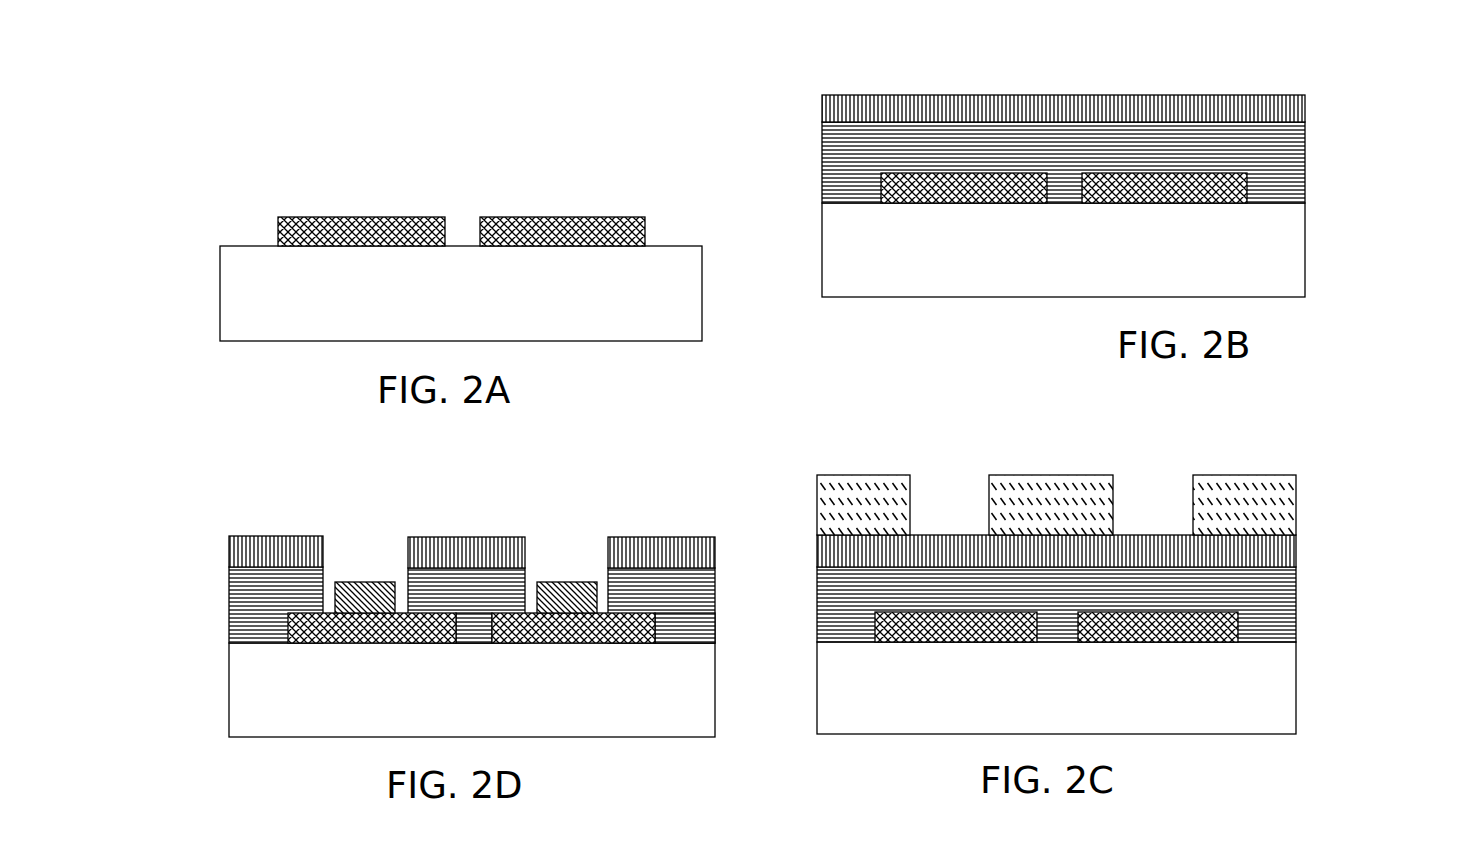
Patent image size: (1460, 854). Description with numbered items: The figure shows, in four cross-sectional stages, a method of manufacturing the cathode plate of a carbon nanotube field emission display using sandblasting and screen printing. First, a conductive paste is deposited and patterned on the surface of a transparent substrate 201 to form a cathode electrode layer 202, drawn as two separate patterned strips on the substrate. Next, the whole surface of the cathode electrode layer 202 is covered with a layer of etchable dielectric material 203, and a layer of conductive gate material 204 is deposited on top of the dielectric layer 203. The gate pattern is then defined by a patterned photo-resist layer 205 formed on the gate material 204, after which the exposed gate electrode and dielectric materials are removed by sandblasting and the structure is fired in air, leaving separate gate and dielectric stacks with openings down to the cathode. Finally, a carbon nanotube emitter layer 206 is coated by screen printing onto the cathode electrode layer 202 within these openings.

In FIG. 2A, the transparent substrate 201 is at (233, 295).
In FIG. 2B, the transparent substrate 201 is at (843, 233).
In FIG. 2C, the transparent substrate 201 is at (1272, 698).
In FIG. 2D, the transparent substrate 201 is at (240, 698).
In FIG. 2A, the cathode electrode layer 202 is at (280, 232).
In FIG. 2B, the cathode electrode layer 202 is at (823, 163).
In FIG. 2C, the cathode electrode layer 202 is at (868, 612).
In FIG. 2D, the cathode electrode layer 202 is at (243, 617).
In FIG. 2B, the etchable dielectric material layer 203 is at (1283, 178).
In FIG. 2C, the etchable dielectric material layer 203 is at (1275, 610).
In FIG. 2D, the etchable dielectric material layer 203 is at (228, 585).
In FIG. 2B, the conductive gate material layer 204 is at (1283, 120).
In FIG. 2C, the conductive gate material layer 204 is at (1275, 548).
In FIG. 2D, the conductive gate material layer 204 is at (255, 545).
In FIG. 2C, the patterned photo-resist layer 205 is at (1235, 482).
In FIG. 2D, the carbon nanotube emitter layer 206 is at (365, 580).